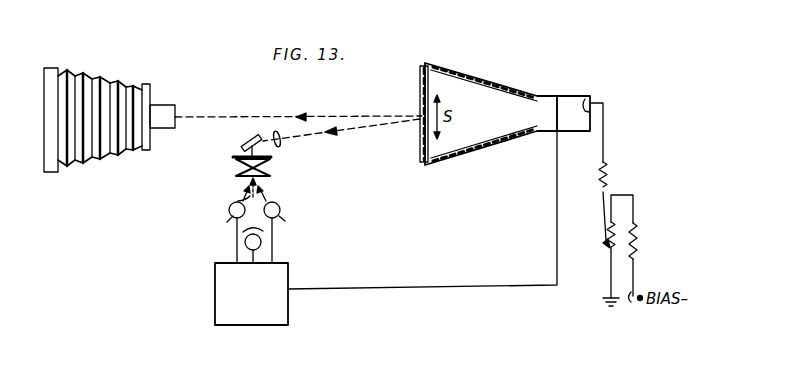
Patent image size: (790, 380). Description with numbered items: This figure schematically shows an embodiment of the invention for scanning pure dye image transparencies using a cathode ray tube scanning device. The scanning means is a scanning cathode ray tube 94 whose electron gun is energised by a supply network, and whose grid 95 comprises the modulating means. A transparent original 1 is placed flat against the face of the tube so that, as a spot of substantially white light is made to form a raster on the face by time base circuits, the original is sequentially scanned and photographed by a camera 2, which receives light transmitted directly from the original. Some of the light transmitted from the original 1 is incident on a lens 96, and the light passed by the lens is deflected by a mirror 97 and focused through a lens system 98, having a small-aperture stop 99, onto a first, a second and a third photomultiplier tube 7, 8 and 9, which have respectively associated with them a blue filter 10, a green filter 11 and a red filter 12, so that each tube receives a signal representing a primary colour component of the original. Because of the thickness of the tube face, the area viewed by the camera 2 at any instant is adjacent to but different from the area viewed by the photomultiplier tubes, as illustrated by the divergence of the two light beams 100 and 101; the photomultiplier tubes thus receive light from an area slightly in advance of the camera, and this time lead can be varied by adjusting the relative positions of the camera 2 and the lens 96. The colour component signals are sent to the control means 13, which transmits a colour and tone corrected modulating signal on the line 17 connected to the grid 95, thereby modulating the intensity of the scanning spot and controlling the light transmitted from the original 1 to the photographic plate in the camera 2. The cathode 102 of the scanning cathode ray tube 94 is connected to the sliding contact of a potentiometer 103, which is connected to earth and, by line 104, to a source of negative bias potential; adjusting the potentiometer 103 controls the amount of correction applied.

The camera 2 is at (52, 76).
The light beam 100 is at (398, 115).
The light beam 101 is at (388, 124).
The lens 96 is at (281, 146).
The mirror 97 is at (246, 145).
The stop 99 is at (233, 157).
The lens system 98 is at (232, 173).
The blue filter 10 is at (230, 206).
The red filter 12 is at (276, 203).
The second photomultiplier tube 8 is at (245, 243).
The first photomultiplier tube 7 is at (224, 223).
The green filter 11 is at (244, 231).
The third photomultiplier tube 9 is at (288, 225).
The control means 13 is at (258, 304).
The line 17 is at (393, 288).
The scanning cathode ray tube 94 is at (528, 96).
The original 1 is at (420, 92).
The grid 95 is at (557, 100).
The cathode 102 is at (584, 98).
The potentiometer 103 is at (607, 252).
The line 104 is at (620, 287).